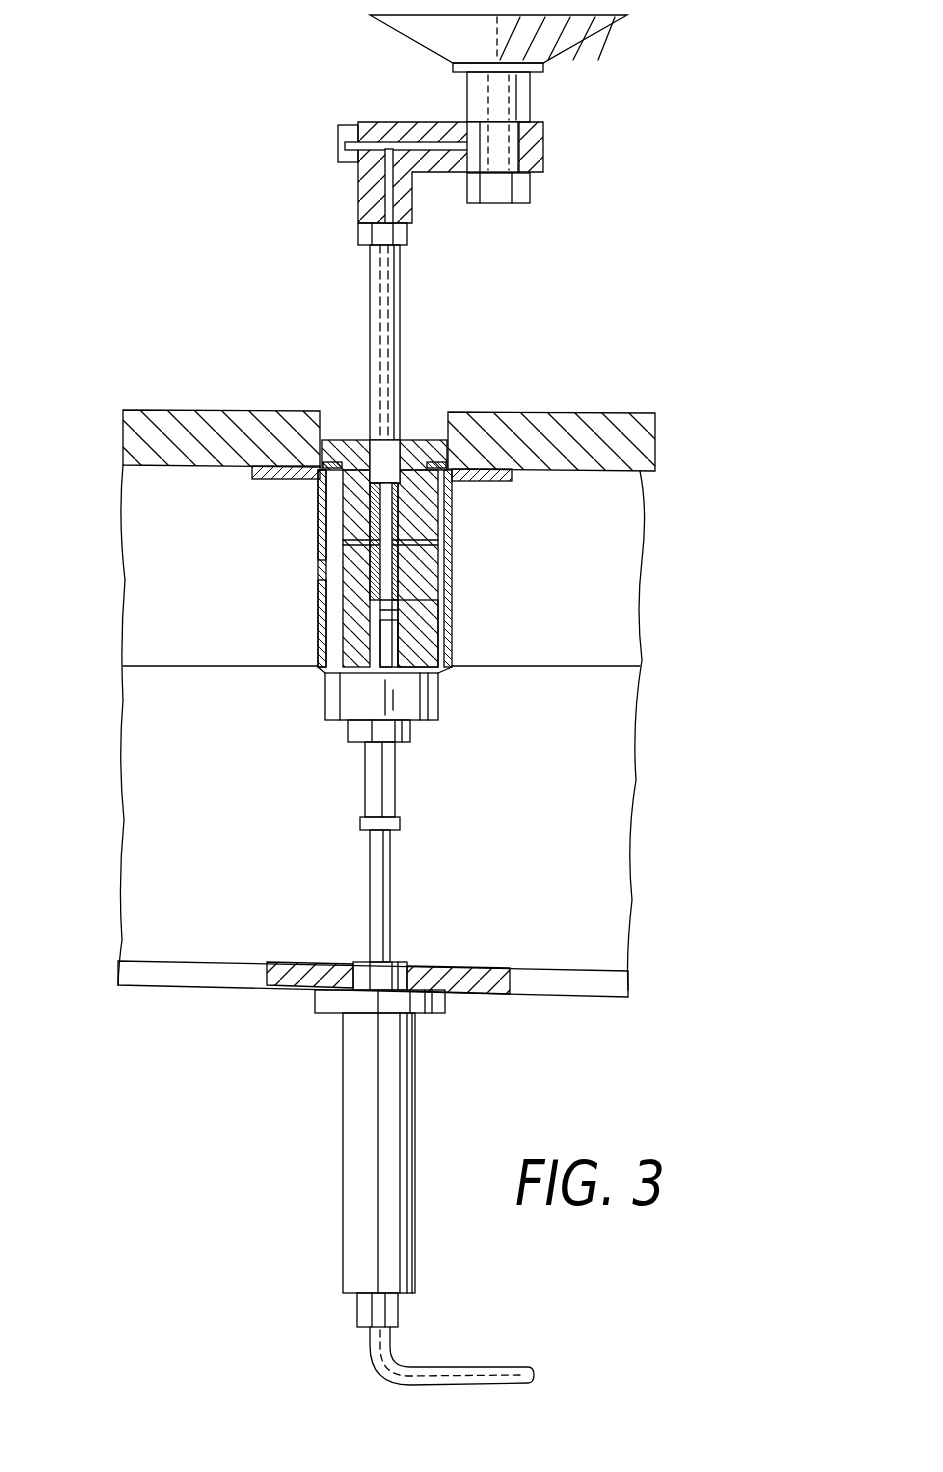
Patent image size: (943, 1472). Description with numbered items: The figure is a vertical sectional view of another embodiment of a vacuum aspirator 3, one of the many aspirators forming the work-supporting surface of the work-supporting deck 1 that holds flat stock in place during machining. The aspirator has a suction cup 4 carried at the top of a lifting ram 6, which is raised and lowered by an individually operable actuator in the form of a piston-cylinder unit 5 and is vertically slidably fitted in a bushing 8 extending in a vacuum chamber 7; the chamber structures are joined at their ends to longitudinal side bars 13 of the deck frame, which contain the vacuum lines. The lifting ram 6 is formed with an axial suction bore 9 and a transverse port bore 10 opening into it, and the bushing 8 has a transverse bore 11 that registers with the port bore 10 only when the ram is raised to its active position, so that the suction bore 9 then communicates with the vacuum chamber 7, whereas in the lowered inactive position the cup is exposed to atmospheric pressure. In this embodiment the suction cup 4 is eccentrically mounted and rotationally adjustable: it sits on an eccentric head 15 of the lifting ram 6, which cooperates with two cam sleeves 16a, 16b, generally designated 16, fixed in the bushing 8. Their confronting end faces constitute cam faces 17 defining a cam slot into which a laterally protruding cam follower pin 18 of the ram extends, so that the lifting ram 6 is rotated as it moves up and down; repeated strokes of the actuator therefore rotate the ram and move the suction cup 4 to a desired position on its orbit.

The work-supporting deck 1 is at (540, 413).
The vacuum aspirator 3 is at (297, 643).
The suction cup 4 is at (568, 42).
The piston-cylinder unit 5 is at (362, 1155).
The lifting ram 6 is at (405, 318).
The vacuum chamber 7 is at (430, 627).
The bushing 8 is at (417, 633).
The axial suction bore 9 is at (378, 300).
The transverse port bore 10 is at (407, 528).
The transverse bore 11 is at (413, 540).
The longitudinal side bar 13 is at (613, 516).
The eccentric head 15 is at (420, 122).
The cam sleeves 16 is at (350, 510).
The cam sleeve 16a is at (360, 572).
The cam sleeve 16b is at (355, 614).
The cam faces 17 is at (427, 602).
The cam follower pin 18 is at (372, 588).